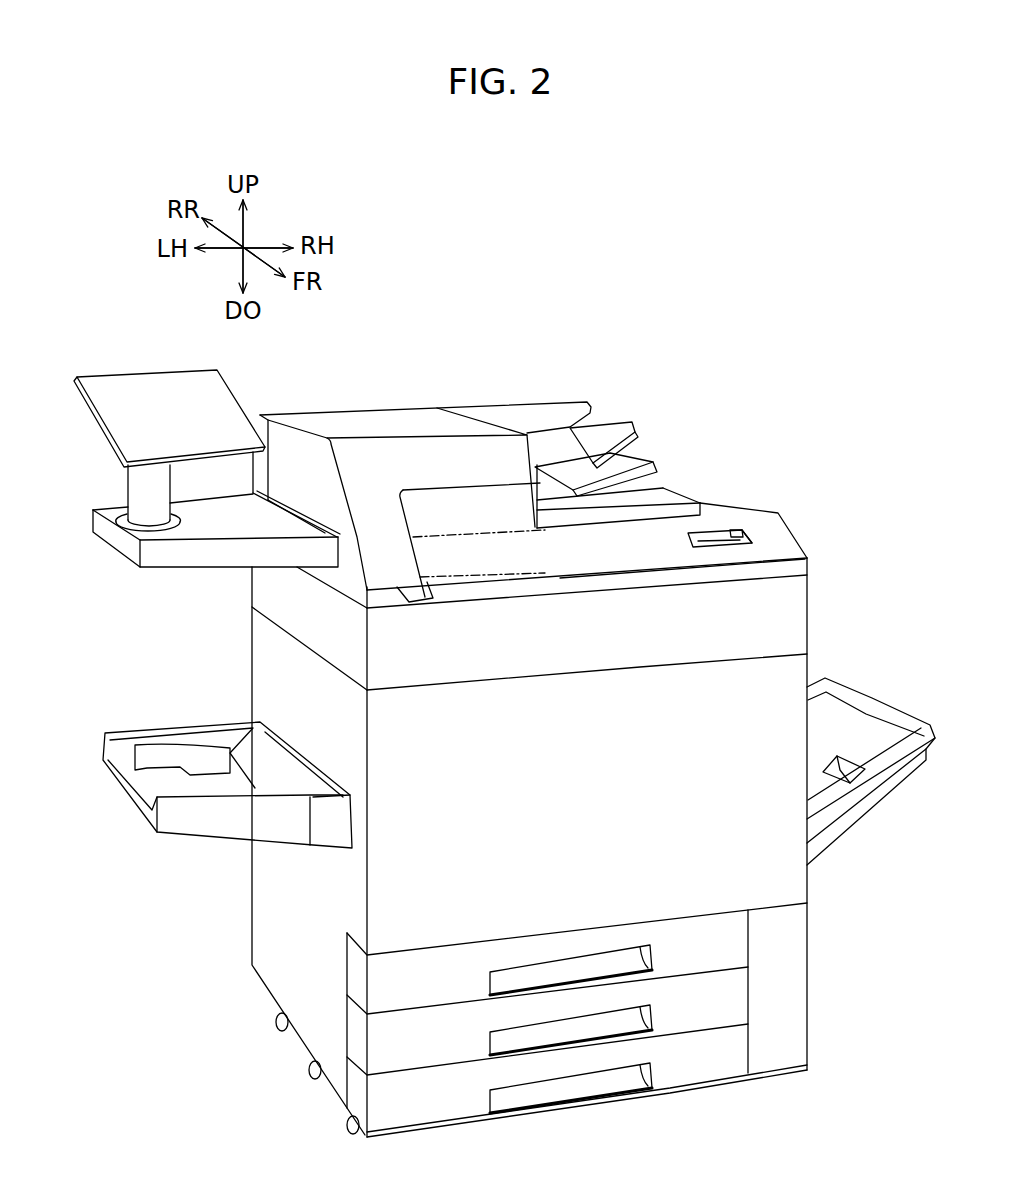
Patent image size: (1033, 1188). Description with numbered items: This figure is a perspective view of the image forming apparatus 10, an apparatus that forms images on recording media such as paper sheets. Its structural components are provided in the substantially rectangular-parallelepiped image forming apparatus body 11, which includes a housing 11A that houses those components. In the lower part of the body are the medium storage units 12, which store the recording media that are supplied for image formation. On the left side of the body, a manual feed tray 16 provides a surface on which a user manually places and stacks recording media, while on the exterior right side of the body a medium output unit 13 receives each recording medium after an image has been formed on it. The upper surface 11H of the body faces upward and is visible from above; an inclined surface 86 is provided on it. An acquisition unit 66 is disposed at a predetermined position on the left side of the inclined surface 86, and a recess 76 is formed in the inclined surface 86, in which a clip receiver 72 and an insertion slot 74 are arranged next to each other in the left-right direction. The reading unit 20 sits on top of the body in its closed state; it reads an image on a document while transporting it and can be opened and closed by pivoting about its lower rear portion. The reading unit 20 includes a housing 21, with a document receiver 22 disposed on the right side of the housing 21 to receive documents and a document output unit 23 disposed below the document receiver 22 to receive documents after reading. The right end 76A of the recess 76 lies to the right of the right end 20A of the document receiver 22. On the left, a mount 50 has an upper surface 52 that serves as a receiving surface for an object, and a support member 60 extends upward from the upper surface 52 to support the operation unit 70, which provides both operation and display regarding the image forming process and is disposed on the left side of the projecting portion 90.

The image forming apparatus 10 is at (745, 327).
The image forming apparatus body 11 is at (808, 613).
The housing 11A is at (808, 663).
The upper surface 11H is at (685, 492).
The medium storage unit 12 is at (355, 977).
The medium output unit 13 is at (901, 793).
The manual feed tray 16 is at (198, 838).
The reading unit 20 is at (430, 405).
The right end of document receiver 20A is at (703, 505).
The housing 21 is at (387, 408).
The document receiver 22 is at (600, 420).
The document output unit 23 is at (638, 452).
The mount 50 is at (230, 568).
The upper surface 52 is at (219, 520).
The support member 60 is at (126, 481).
The acquisition unit 66 is at (493, 562).
The operation unit 70 is at (83, 407).
The clip receiver 72 is at (710, 546).
The insertion slot 74 is at (734, 530).
The recess 76 is at (708, 532).
The right end of recess 76A is at (753, 534).
The inclined surface 86 is at (615, 555).
The projecting portion 90 is at (400, 590).